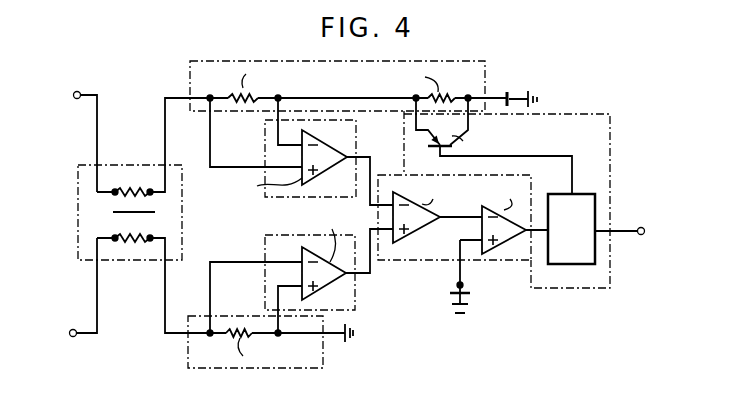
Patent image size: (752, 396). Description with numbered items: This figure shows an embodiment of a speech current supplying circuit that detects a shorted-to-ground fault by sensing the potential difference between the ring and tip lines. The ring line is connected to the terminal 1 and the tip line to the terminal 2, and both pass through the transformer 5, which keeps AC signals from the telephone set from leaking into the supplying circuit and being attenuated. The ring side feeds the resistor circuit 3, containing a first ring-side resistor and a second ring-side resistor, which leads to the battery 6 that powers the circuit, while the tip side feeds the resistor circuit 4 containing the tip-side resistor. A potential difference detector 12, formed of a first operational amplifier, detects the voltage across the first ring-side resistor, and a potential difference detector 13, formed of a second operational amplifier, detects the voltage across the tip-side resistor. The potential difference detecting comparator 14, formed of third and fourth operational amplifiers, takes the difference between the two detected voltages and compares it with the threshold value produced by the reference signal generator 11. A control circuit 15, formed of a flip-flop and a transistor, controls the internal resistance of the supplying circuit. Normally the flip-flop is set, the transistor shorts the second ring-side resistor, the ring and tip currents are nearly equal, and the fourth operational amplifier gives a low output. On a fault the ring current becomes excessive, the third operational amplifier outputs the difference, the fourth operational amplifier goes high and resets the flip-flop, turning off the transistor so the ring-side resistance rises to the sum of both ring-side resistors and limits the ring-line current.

The terminal 1 is at (77, 91).
The terminal 2 is at (72, 337).
The resistor circuit 3 is at (205, 62).
The resistor circuit 4 is at (200, 368).
The transformer 5 is at (78, 233).
The battery 6 is at (507, 91).
The reference signal generating circuit 11 is at (446, 289).
The potential difference detector 12 is at (265, 155).
The potential difference detector 13 is at (266, 258).
The potential difference detecting comparator 14 is at (420, 262).
The control circuit 15 is at (612, 168).